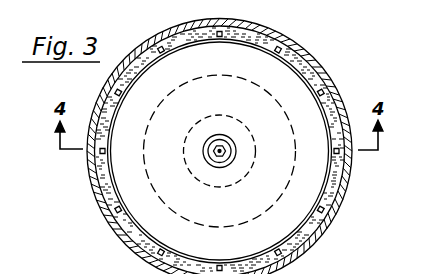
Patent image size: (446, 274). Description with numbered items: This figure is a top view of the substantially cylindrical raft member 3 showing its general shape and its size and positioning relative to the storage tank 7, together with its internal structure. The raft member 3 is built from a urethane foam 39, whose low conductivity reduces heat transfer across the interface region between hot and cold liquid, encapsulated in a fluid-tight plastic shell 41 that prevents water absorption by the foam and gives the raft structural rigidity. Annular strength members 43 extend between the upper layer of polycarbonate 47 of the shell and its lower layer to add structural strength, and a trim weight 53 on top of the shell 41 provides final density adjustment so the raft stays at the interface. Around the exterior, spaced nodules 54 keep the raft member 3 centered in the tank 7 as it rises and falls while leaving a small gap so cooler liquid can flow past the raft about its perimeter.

The raft member 3 is at (316, 61).
The tank 7 is at (332, 81).
The urethane foam 39 is at (128, 243).
The fluid-tight plastic shell 41 is at (338, 191).
The annular strength members 43 is at (252, 170).
The upper layer of polycarbonate 47 is at (226, 102).
The trim weight 53 is at (229, 139).
The nodules 54 is at (268, 48).